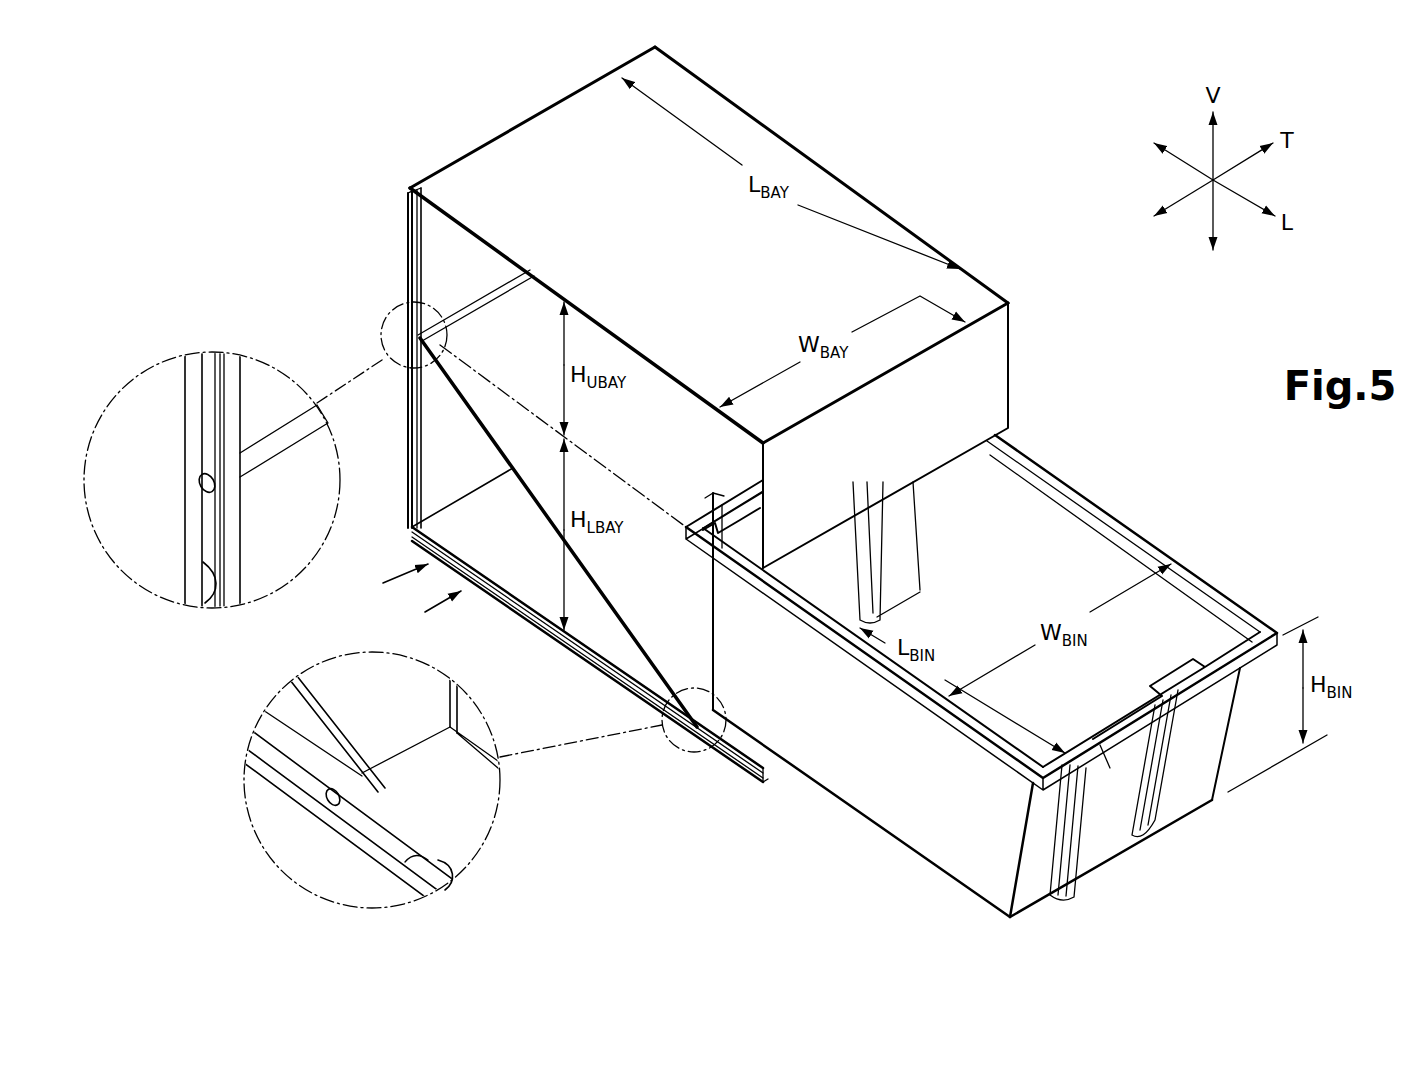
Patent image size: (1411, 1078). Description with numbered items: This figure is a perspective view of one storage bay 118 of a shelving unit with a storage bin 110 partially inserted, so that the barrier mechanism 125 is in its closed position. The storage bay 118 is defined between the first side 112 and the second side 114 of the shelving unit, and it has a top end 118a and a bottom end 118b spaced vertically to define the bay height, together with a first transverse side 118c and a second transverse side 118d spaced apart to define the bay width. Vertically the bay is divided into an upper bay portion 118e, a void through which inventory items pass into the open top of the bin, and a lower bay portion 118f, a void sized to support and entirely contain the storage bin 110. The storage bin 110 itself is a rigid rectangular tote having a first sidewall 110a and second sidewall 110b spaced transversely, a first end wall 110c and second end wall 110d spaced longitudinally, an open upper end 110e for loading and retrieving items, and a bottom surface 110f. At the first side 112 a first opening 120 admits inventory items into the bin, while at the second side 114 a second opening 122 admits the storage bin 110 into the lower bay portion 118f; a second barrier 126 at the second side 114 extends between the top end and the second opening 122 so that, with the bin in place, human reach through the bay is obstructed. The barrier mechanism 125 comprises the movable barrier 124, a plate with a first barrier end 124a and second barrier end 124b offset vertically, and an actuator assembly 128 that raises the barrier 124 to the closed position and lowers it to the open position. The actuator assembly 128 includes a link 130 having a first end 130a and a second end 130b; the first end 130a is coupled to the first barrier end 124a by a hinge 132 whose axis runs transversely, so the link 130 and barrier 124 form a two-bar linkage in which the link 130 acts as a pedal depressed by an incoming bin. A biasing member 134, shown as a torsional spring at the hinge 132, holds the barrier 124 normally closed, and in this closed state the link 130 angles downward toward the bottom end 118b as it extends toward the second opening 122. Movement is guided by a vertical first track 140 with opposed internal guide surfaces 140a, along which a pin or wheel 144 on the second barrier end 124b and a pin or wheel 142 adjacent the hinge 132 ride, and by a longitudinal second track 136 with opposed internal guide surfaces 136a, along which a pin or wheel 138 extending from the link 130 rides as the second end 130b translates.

The storage bin 110 is at (1090, 500).
The first sidewall 110a is at (1103, 563).
The second sidewall 110b is at (967, 827).
The first end wall 110c is at (1122, 827).
The second end wall 110d is at (980, 492).
The upper end 110e is at (1182, 619).
The bottom surface 110f is at (1198, 810).
The first side 112 is at (552, 105).
The second side 114 is at (975, 348).
The storage bay 118 is at (638, 582).
The top end 118a is at (842, 218).
The bottom end 118b is at (495, 599).
The first transverse side 118c is at (500, 250).
The second transverse side 118d is at (728, 100).
The upper bay portion 118e is at (708, 452).
The lower bay portion 118f is at (670, 596).
The first opening 120 is at (400, 207).
The second opening 122 is at (750, 675).
The barrier 124 is at (452, 243).
The first barrier end 124a is at (453, 307).
The second barrier end 124b is at (427, 215).
The barrier mechanism 125 is at (382, 581).
The second barrier 126 is at (945, 410).
The actuator assembly 128 is at (419, 608).
The link 130 is at (598, 585).
The first end 130a is at (427, 406).
The second end 130b is at (700, 700).
The hinge 132 is at (283, 437).
The biasing member 134 is at (300, 427).
The second track 136 is at (598, 661).
The internal guide surfaces 136a is at (443, 880).
The pin or wheel 138 is at (333, 803).
The first track 140 is at (185, 550).
The internal guide surfaces 140a is at (211, 592).
The pin or wheel 142 is at (202, 480).
The pin or wheel 144 is at (413, 190).